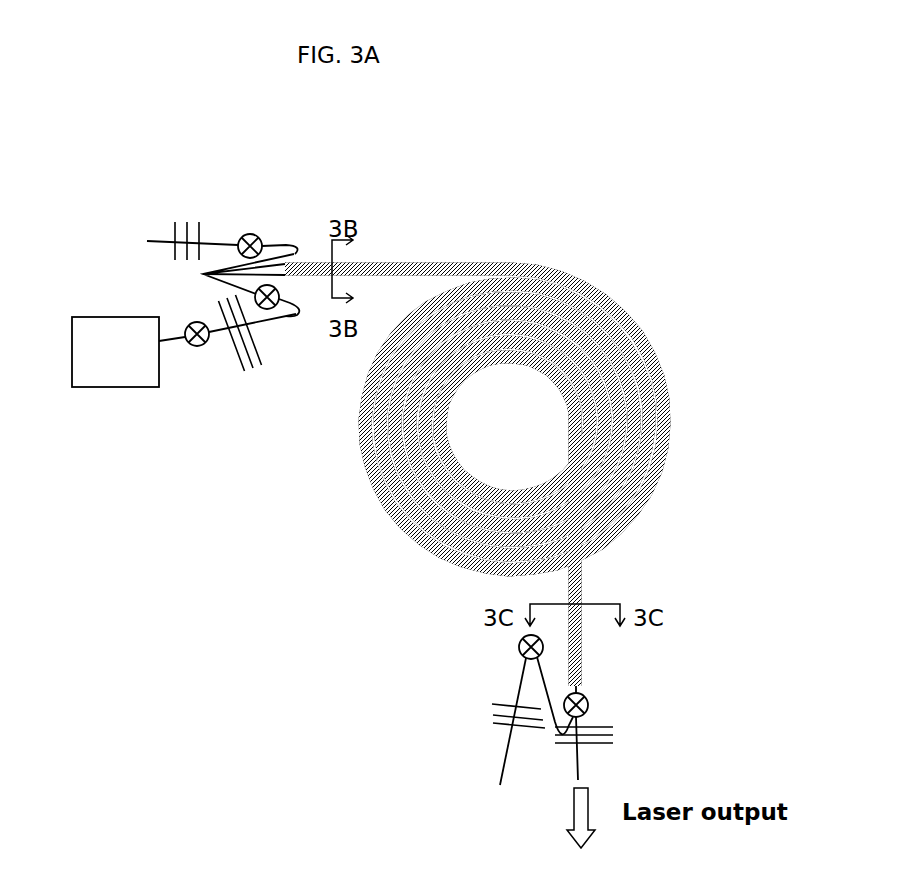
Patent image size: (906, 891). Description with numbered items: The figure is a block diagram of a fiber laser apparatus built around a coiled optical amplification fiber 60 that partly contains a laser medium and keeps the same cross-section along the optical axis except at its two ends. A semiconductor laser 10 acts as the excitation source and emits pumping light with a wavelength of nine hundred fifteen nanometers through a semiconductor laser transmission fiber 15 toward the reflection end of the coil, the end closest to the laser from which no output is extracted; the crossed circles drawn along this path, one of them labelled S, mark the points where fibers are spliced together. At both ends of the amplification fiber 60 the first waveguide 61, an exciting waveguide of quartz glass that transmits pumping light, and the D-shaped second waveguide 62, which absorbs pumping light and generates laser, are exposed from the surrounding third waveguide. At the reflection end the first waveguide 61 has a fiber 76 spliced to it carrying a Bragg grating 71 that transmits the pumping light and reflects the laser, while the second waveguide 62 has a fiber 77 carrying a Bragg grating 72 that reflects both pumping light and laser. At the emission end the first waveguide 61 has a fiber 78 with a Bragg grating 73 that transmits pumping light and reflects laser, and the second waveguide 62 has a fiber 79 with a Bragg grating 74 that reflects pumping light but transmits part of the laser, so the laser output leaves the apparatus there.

The semiconductor laser 10 is at (72, 350).
The semiconductor laser transmission fiber 15 is at (177, 345).
The splice point S is at (200, 346).
The optical amplification fiber 60 is at (647, 320).
The first waveguide 61 is at (193, 275).
The second waveguide 62 is at (270, 253).
The Bragg grating 71 is at (247, 330).
The Bragg grating 72 is at (192, 217).
The Bragg grating 73 is at (510, 713).
The Bragg grating 74 is at (613, 740).
The fiber 76 is at (287, 317).
The fiber 77 is at (224, 243).
The fiber 78 is at (503, 760).
The fiber 79 is at (582, 720).